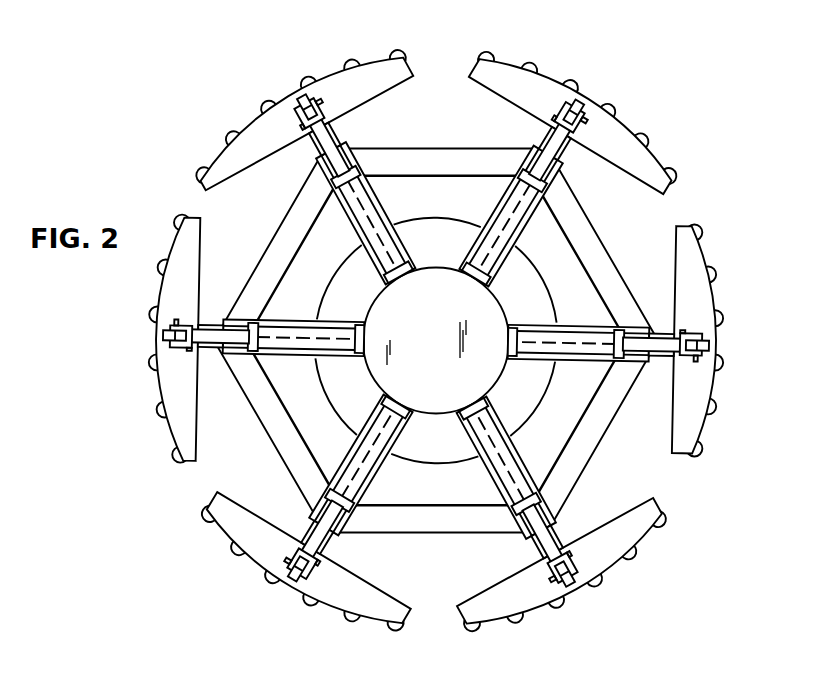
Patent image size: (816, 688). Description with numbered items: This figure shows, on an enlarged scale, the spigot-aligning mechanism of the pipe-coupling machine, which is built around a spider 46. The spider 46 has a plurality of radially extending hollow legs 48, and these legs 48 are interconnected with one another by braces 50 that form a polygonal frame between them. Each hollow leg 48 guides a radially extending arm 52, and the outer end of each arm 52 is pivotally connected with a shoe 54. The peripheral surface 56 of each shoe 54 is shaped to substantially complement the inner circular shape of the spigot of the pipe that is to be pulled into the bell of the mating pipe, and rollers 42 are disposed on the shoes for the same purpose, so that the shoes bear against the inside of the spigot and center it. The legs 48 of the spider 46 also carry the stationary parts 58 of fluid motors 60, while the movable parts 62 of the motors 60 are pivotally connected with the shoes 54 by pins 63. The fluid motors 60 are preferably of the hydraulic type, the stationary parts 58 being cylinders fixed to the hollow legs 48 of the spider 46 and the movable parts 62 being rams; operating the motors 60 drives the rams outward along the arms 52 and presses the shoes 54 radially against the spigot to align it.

The rollers 42 is at (436, 334).
The spider 46 is at (203, 60).
The hollow legs 48 is at (436, 340).
The braces 50 is at (424, 152).
The arm 52 is at (340, 130).
The shoe 54 is at (403, 46).
The peripheral surface 56 is at (622, 126).
The stationary parts 58 is at (470, 275).
The fluid motors 60 is at (436, 340).
The movable parts 62 is at (318, 136).
The pins 63 is at (295, 120).